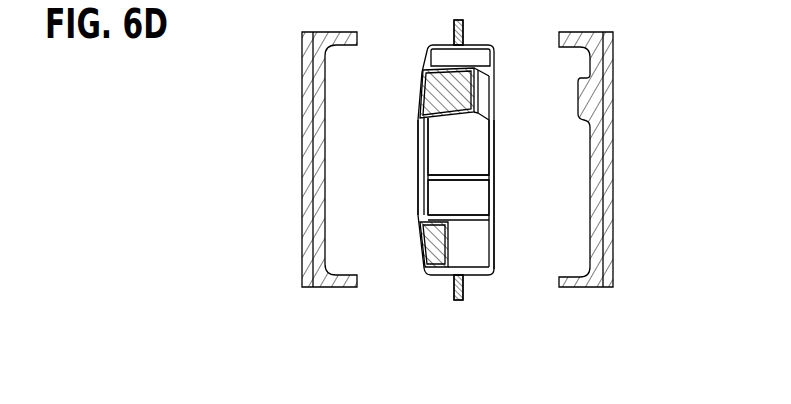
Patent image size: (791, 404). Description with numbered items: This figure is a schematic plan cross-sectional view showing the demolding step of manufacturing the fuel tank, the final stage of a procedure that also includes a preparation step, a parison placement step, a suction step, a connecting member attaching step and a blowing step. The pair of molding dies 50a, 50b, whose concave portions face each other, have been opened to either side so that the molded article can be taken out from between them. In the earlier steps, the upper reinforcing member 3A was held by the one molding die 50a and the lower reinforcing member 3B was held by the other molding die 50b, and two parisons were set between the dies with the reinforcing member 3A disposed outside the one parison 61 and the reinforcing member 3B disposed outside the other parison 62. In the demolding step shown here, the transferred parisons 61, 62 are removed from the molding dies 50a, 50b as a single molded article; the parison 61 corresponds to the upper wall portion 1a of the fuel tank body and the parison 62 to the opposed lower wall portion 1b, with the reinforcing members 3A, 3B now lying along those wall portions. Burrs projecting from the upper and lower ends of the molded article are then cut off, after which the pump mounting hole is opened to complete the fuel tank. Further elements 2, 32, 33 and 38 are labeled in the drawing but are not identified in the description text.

The battery cell 2 is at (458, 175).
The upper reinforcing member 3A is at (420, 143).
The lower reinforcing member 3B is at (492, 198).
The case wall 32 is at (420, 197).
The insulating block 33 is at (437, 87).
The bottom block 38 is at (421, 240).
The molding die 50a is at (302, 162).
The molding die 50b is at (613, 158).
The parison 61 is at (428, 46).
The upper wall portion 1a is at (425, 24).
The parison 62 is at (515, 28).
The lower wall portion 1b is at (512, 152).